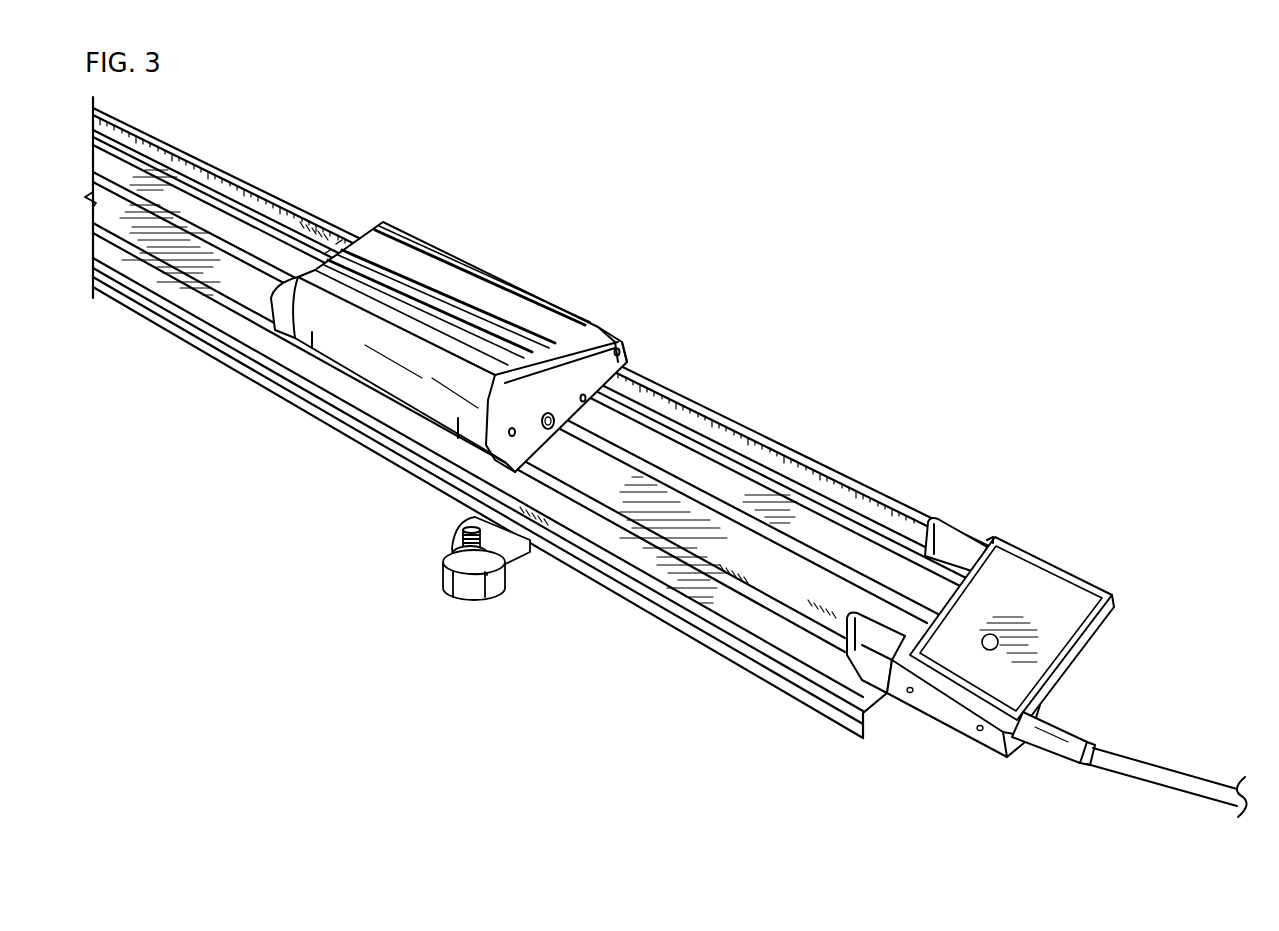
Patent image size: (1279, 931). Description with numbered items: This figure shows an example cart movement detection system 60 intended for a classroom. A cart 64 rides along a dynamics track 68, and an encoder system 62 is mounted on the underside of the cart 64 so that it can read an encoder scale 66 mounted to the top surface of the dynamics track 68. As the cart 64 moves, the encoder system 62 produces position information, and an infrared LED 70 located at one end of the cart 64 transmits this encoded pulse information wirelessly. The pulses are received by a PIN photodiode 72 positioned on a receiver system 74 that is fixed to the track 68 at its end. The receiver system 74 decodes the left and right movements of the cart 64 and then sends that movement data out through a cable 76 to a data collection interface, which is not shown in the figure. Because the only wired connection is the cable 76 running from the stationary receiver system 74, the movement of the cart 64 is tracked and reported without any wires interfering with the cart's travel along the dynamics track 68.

The cart movement detection system 60 is at (814, 298).
The encoder system 62 is at (480, 337).
The cart 64 is at (467, 263).
The encoder scale 66 is at (718, 477).
The dynamics track 68 is at (281, 202).
The infrared LED 70 is at (566, 415).
The PIN photodiode 72 is at (876, 698).
The receiver system 74 is at (1027, 552).
The cable 76 is at (1158, 754).